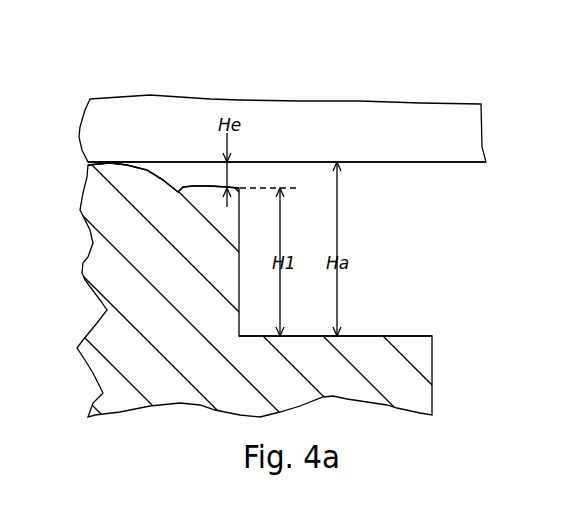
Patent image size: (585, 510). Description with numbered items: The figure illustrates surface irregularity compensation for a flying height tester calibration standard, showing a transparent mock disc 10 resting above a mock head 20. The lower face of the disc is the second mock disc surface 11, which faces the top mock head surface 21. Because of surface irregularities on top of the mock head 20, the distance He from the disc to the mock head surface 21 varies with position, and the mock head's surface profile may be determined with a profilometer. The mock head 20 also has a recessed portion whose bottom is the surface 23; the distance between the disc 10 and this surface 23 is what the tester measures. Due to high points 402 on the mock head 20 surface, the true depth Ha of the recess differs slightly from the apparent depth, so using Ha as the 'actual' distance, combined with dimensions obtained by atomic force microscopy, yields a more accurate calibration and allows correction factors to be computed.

The mock disc 10 is at (421, 124).
The second mock disc surface 11 is at (433, 163).
The mock head 20 is at (393, 377).
The mock head surface 21 is at (200, 187).
The surface of recessed portion 23 is at (403, 335).
The high points 402 is at (120, 162).